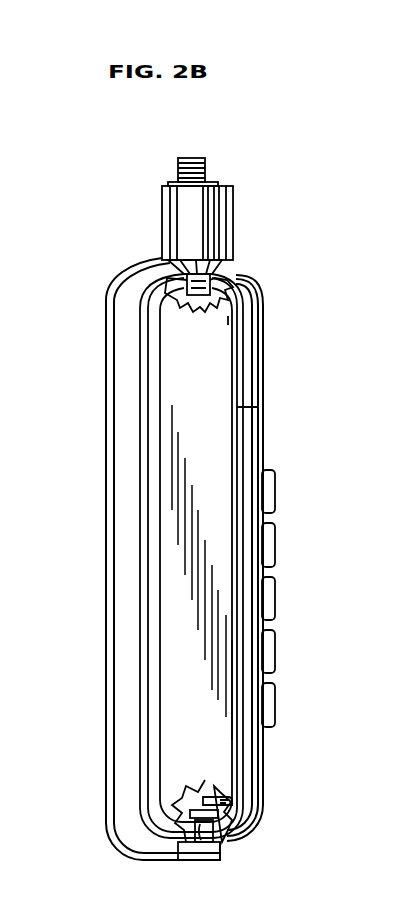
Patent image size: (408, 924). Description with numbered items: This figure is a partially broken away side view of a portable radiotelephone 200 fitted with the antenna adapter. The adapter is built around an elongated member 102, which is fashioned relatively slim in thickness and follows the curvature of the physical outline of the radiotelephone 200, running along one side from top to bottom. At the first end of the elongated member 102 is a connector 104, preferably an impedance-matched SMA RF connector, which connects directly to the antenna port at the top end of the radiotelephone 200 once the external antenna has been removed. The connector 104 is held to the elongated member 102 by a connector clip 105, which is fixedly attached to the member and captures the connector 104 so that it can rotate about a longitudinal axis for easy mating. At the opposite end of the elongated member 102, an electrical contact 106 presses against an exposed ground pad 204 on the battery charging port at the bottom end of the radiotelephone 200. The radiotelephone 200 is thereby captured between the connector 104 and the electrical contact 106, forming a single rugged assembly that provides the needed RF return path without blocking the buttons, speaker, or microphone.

The elongated member 102 is at (107, 662).
The connector 104 is at (203, 163).
The connector clip 105 is at (162, 195).
The electrical contact 106 is at (200, 841).
The radiotelephone 200 is at (262, 414).
The ground pad 204 is at (226, 832).